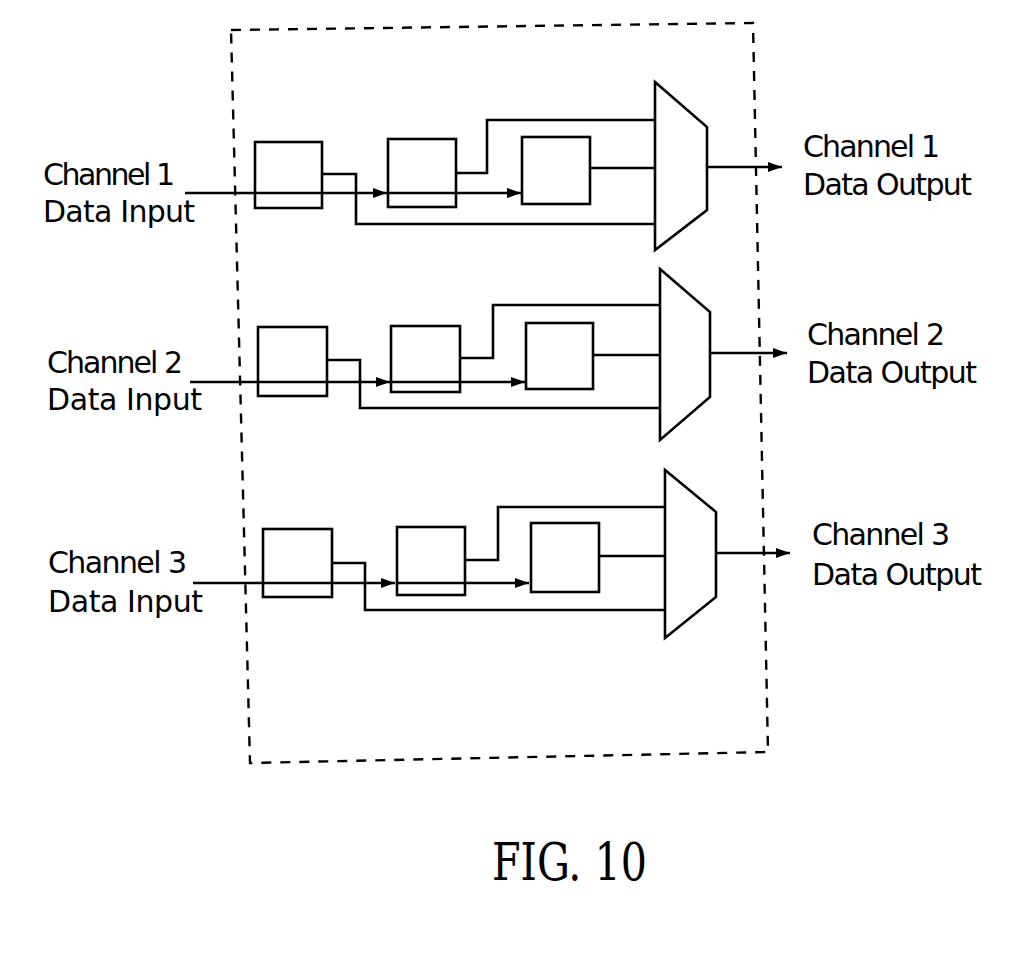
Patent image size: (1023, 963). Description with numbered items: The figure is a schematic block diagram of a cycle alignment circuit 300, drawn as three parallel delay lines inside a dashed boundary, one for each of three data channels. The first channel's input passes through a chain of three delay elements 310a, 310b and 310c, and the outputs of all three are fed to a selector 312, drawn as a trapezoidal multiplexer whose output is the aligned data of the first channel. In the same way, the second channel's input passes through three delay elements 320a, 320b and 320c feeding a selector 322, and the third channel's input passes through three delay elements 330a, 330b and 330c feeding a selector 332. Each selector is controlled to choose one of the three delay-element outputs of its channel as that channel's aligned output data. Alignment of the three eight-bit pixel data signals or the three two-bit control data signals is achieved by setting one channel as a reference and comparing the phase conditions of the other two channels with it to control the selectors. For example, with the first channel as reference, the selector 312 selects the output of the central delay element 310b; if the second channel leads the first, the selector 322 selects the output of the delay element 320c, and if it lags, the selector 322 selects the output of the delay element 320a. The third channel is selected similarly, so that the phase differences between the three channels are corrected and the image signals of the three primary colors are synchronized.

The cycle alignment circuit 300 is at (753, 45).
The delay element 310a is at (290, 142).
The delay element 310b is at (421, 139).
The delay element 310c is at (558, 137).
The selector 312 is at (690, 110).
The delay element 320a is at (293, 327).
The delay element 320b is at (425, 326).
The delay element 320c is at (561, 323).
The selector 322 is at (700, 300).
The delay element 330a is at (300, 529).
The delay element 330b is at (430, 527).
The delay element 330c is at (568, 523).
The selector 332 is at (700, 503).